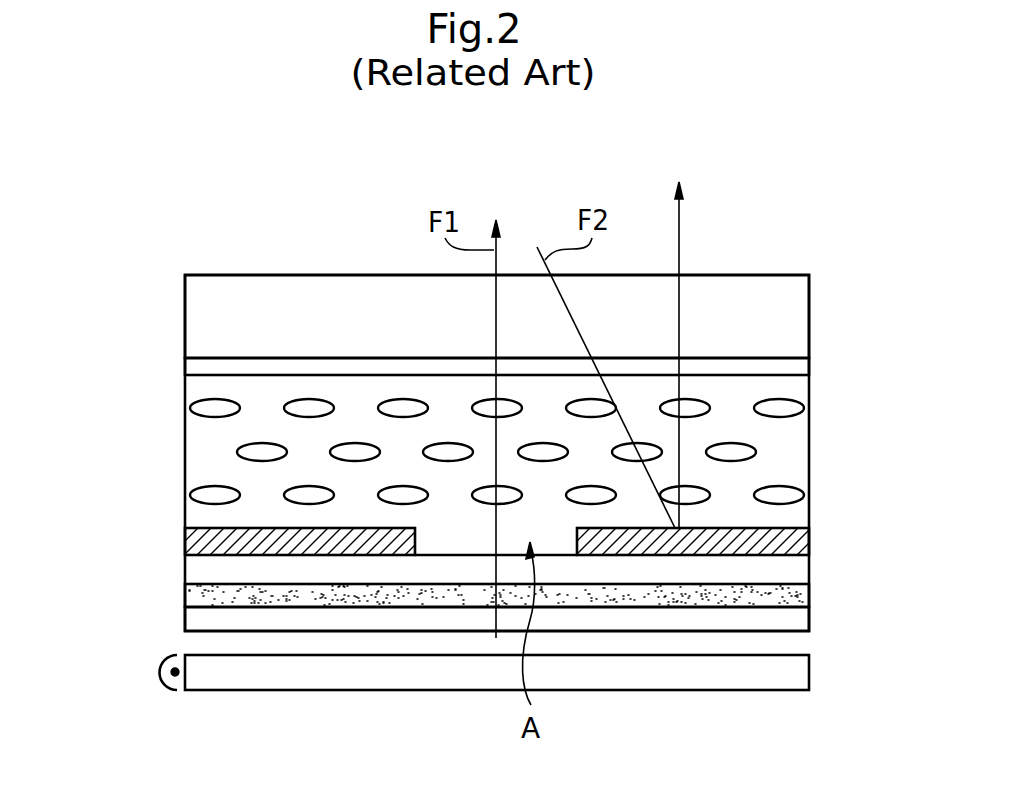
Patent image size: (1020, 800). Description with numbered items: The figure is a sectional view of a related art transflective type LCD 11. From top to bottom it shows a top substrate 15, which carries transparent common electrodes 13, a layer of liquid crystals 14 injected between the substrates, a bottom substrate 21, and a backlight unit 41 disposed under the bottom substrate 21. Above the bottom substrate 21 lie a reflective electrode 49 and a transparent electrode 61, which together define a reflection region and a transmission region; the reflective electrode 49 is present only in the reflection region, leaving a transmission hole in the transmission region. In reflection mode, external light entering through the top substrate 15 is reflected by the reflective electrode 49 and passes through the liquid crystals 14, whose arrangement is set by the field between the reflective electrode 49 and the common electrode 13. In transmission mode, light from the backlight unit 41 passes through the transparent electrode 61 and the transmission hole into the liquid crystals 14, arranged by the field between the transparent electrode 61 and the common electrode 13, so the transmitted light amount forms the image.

The transflective type LCD 11 is at (116, 334).
The top substrate 15 is at (803, 320).
The transparent common electrode 13 is at (803, 366).
The liquid crystals 14 is at (800, 411).
The reflective electrode 49 is at (803, 543).
The transparent electrode 61 is at (803, 595).
The bottom substrate 21 is at (803, 620).
The backlight unit 41 is at (803, 672).